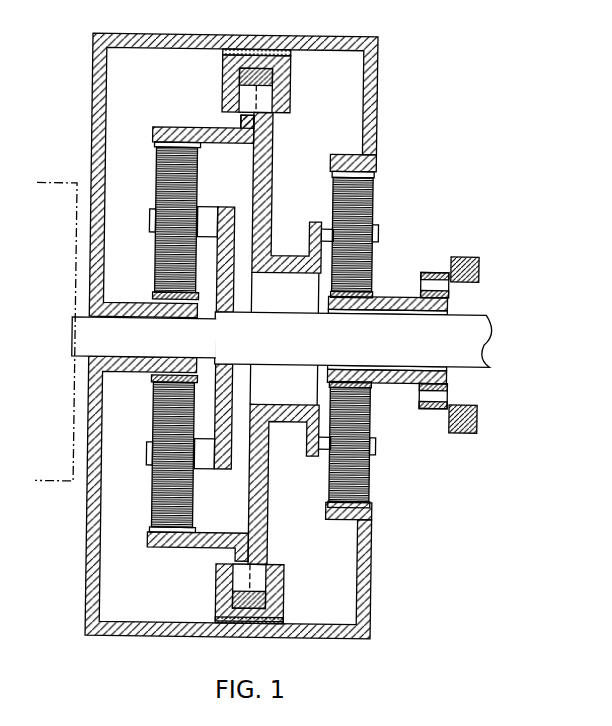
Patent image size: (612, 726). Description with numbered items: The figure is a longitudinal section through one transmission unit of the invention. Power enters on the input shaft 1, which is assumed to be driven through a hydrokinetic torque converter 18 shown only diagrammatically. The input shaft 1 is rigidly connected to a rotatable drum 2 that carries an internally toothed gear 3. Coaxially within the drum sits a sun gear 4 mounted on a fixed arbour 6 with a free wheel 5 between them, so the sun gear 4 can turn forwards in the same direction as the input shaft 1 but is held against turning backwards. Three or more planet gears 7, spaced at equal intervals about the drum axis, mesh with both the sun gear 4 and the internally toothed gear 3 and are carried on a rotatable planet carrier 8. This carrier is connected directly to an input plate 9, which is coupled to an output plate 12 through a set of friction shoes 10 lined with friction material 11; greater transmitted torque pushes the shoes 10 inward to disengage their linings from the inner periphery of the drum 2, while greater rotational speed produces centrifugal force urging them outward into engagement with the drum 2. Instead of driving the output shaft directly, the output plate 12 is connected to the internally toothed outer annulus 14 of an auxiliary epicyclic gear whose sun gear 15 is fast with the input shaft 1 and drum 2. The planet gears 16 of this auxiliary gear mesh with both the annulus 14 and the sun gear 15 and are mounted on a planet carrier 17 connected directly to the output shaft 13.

The input shaft 1 is at (83, 329).
The rotatable drum 2 is at (190, 36).
The internally toothed gear 3 is at (378, 173).
The sun gear 4 is at (376, 296).
The free wheel 5 is at (440, 288).
The fixed arbour 6 is at (438, 407).
The planet gears 7 is at (372, 206).
The planet carrier 8 is at (315, 230).
The input plate 9 is at (268, 134).
The friction shoes 10 is at (285, 77).
The friction material 11 is at (290, 47).
The output plate 12 is at (240, 127).
The output shaft 13 is at (472, 335).
The internally toothed outer annulus 14 is at (155, 147).
The sun gear 15 is at (150, 297).
The planet gears 16 is at (160, 196).
The planet carrier 17 is at (215, 456).
The hydrokinetic torque converter 18 is at (48, 191).